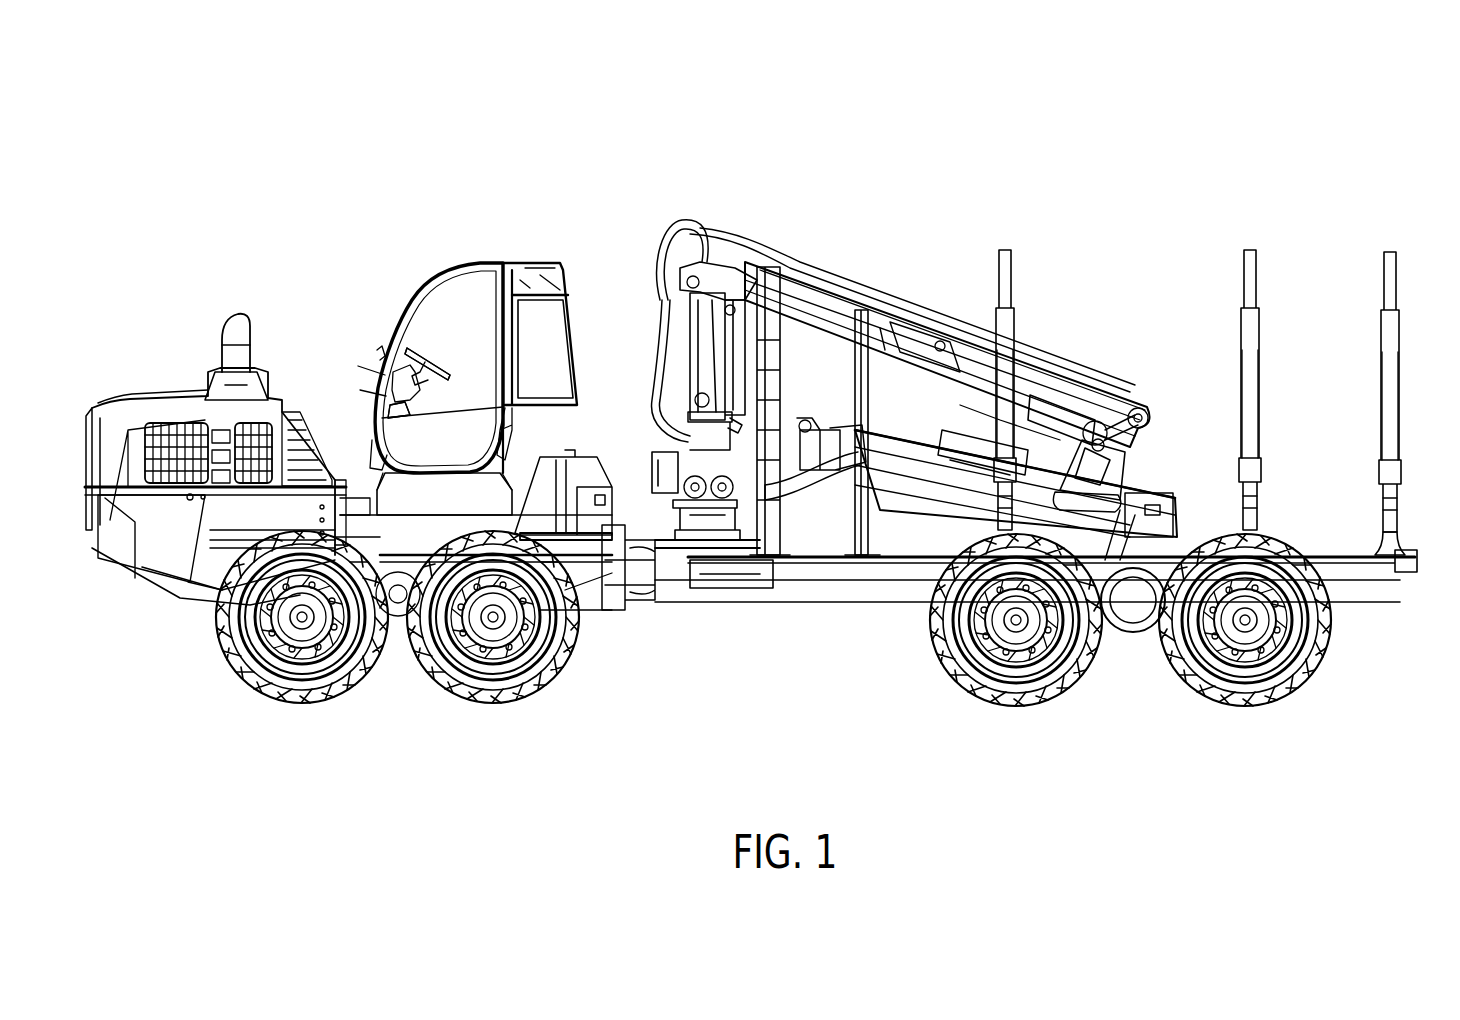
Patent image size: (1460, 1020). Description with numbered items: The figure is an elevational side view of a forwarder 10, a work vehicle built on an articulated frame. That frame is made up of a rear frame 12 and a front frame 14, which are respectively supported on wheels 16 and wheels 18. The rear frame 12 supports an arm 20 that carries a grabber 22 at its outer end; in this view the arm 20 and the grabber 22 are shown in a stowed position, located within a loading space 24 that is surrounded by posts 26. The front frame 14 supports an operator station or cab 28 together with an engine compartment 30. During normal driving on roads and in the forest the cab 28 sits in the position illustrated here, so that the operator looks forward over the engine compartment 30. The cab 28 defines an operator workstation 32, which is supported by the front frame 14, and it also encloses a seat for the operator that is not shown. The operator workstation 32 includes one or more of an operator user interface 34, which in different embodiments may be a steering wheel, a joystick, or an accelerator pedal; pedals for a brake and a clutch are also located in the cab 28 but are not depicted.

The forwarder 10 is at (1120, 90).
The rear frame 12 is at (1337, 192).
The front frame 14 is at (304, 230).
The wheels 16 is at (1060, 705).
The wheels 18 is at (330, 702).
The arm 20 is at (823, 310).
The grabber 22 is at (928, 473).
The loading space 24 is at (1124, 307).
The posts 26 is at (1010, 266).
The cab 28 is at (485, 262).
The engine compartment 30 is at (180, 392).
The operator workstation 32 is at (388, 374).
The operator user interface 34 is at (388, 396).